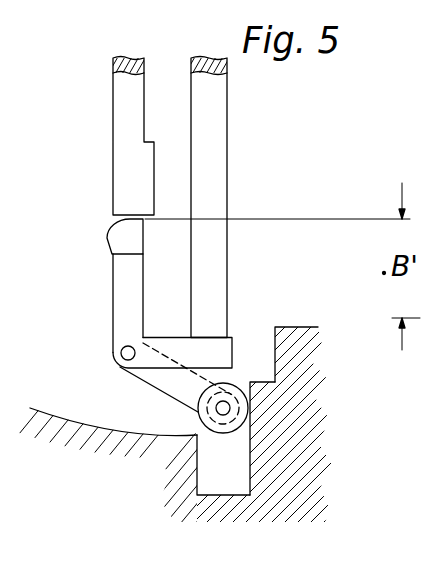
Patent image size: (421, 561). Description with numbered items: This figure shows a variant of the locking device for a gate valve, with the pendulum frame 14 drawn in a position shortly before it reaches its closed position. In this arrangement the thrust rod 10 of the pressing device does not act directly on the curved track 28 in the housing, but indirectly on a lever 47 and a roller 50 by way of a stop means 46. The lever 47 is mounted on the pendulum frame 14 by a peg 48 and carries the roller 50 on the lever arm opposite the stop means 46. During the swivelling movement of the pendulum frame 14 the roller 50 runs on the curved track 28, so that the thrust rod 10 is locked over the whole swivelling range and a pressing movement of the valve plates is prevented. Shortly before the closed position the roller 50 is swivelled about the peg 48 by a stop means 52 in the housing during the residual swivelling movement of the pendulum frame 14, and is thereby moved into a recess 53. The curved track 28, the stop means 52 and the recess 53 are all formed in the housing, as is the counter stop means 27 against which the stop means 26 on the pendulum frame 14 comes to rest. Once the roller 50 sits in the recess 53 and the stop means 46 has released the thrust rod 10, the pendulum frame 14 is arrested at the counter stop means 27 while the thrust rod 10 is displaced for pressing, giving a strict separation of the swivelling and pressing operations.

The thrust rod 10 is at (122, 132).
The pendulum frame 14 is at (215, 140).
The stop means 26 is at (237, 355).
The counter stop means 27 is at (275, 352).
The curved track 28 is at (48, 409).
The stop means 46 is at (104, 237).
The lever 47 is at (121, 292).
The peg 48 is at (117, 361).
The roller 50 is at (246, 397).
The stop means 52 is at (246, 440).
The recess 53 is at (243, 481).